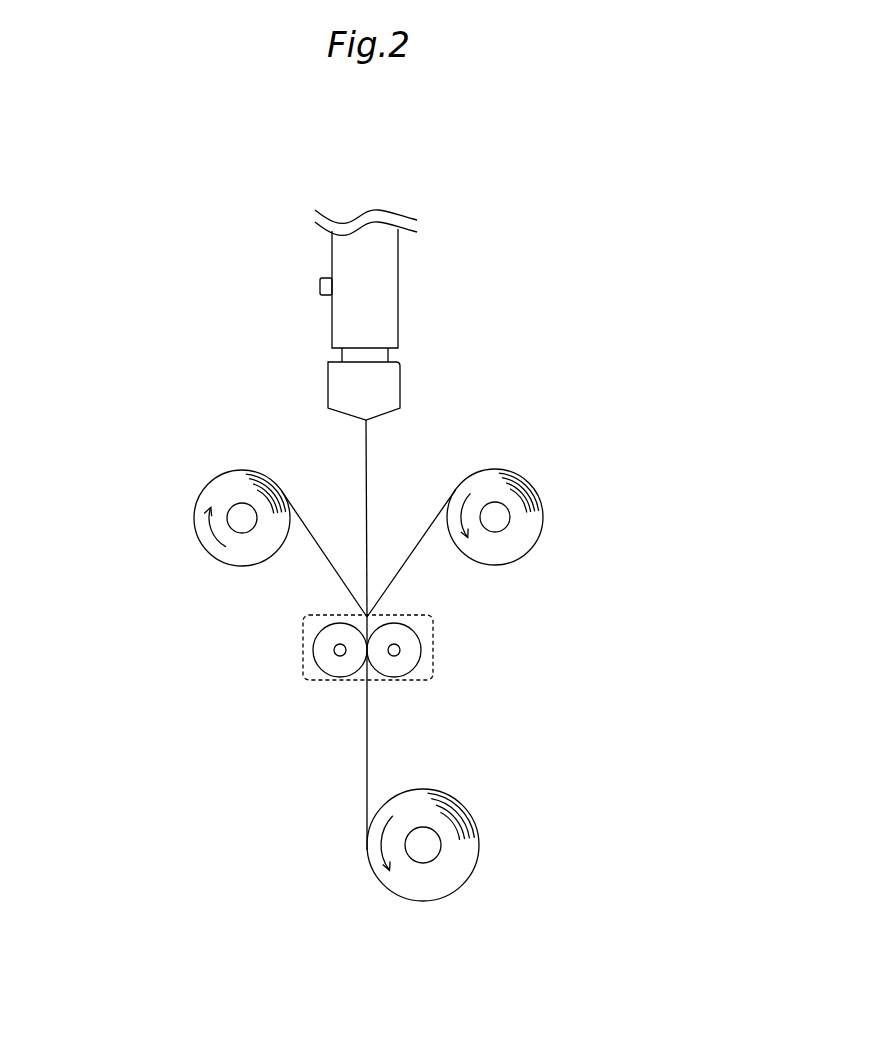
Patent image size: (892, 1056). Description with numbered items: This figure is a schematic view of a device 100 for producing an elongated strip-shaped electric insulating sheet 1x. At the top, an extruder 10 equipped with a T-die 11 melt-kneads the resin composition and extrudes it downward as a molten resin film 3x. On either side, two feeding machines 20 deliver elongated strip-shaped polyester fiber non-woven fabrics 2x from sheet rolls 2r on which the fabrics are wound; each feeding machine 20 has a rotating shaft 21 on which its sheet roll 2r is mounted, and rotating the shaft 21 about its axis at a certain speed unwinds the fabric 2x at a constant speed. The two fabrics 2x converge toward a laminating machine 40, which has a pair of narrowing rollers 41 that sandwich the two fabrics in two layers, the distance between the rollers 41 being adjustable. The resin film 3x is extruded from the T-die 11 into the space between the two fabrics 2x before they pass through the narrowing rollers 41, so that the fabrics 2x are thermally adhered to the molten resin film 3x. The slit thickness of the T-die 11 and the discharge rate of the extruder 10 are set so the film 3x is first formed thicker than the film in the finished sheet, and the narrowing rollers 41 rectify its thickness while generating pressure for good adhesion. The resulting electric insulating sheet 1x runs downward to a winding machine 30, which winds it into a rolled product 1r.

The device 100 is at (150, 230).
The extruder 10 is at (412, 301).
The T-die 11 is at (400, 390).
The resin film 3x is at (370, 460).
The feeding machine 20 is at (193, 485).
The rotating shaft 21 is at (233, 530).
The sheet roll 2r is at (233, 468).
The polyester fiber non-woven fabric 2x is at (323, 568).
The laminating machine 40 is at (443, 682).
The narrowing roller 41 is at (307, 653).
The electric insulating sheet 1x is at (370, 760).
The winding machine 30 is at (365, 880).
The rolled product 1r is at (473, 820).